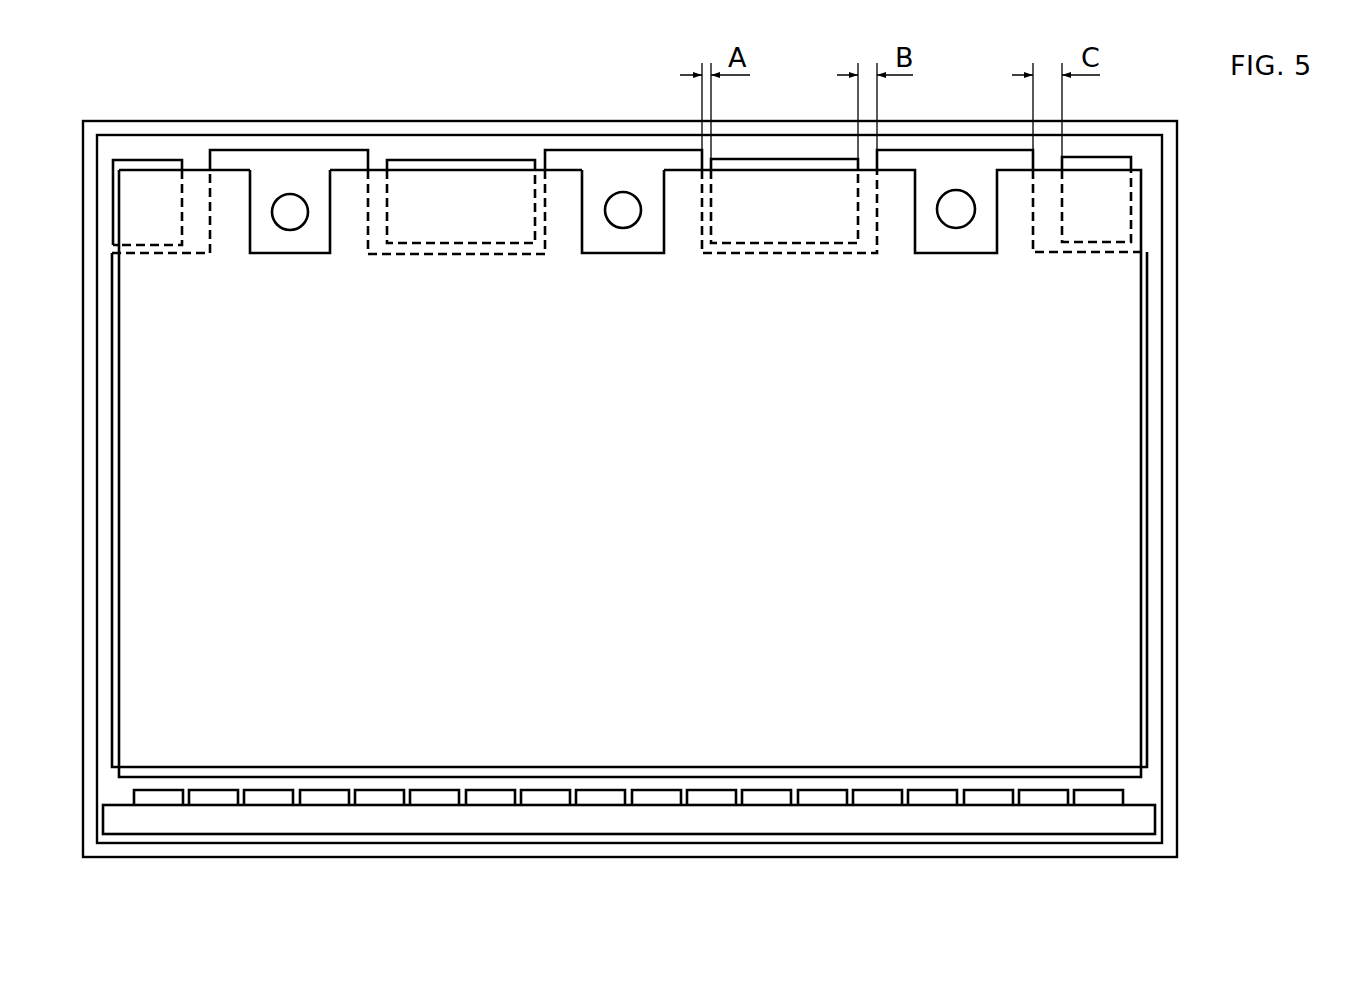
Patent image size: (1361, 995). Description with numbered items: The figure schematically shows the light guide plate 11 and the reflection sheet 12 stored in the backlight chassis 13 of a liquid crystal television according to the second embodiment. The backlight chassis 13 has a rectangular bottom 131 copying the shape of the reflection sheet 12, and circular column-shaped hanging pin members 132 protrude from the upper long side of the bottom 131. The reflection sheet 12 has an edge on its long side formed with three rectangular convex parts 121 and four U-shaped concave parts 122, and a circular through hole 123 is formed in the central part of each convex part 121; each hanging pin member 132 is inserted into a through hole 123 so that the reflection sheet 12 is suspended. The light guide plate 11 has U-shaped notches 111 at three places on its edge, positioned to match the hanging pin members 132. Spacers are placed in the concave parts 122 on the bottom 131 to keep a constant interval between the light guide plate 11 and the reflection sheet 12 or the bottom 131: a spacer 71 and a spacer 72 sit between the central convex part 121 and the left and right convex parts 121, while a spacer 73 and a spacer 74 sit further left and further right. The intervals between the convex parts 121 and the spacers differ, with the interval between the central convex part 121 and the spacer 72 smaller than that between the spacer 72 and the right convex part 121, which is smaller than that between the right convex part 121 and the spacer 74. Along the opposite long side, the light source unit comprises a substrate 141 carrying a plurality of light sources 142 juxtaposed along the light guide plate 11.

The light guide plate 11 is at (681, 430).
The notch 111 is at (258, 173).
The reflection sheet 12 is at (677, 407).
The convex part 121 is at (355, 155).
The concave part 122 is at (375, 162).
The through hole 123 is at (305, 200).
The backlight chassis 13 is at (1177, 208).
The bottom 131 is at (1148, 145).
The hanging pin member 132 is at (287, 203).
The substrate 141 is at (1155, 815).
The light source 142 is at (1125, 795).
The spacer 71 is at (440, 160).
The spacer 72 is at (777, 158).
The spacer 73 is at (158, 158).
The spacer 74 is at (1118, 157).